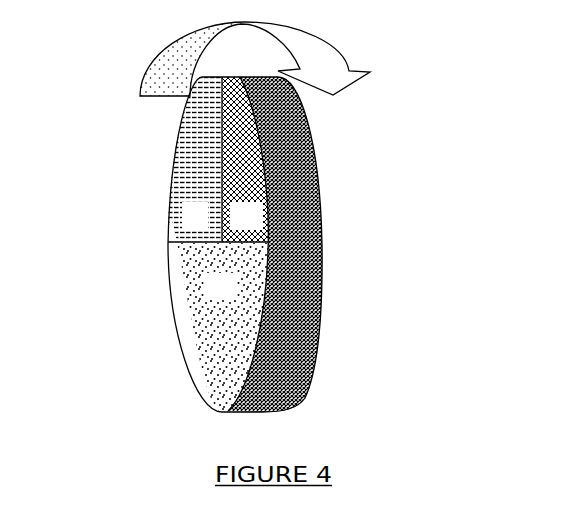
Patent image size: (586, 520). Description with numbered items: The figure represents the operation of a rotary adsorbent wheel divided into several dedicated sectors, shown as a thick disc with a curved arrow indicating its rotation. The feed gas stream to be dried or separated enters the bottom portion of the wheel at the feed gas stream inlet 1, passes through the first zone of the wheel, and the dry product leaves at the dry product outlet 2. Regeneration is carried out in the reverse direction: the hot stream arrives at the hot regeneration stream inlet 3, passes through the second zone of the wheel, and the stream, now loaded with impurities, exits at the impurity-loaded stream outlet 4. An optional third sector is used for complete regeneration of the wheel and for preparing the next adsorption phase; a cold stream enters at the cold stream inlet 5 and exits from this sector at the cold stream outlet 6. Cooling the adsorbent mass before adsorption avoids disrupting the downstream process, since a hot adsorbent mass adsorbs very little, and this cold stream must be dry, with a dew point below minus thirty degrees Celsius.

The feed gas stream inlet 1 is at (207, 328).
The dry product outlet 2 is at (330, 328).
The hot regeneration stream inlet 3 is at (341, 187).
The impurity-loaded stream outlet 4 is at (200, 187).
The cold stream inlet 5 is at (237, 138).
The cold stream outlet 6 is at (315, 135).